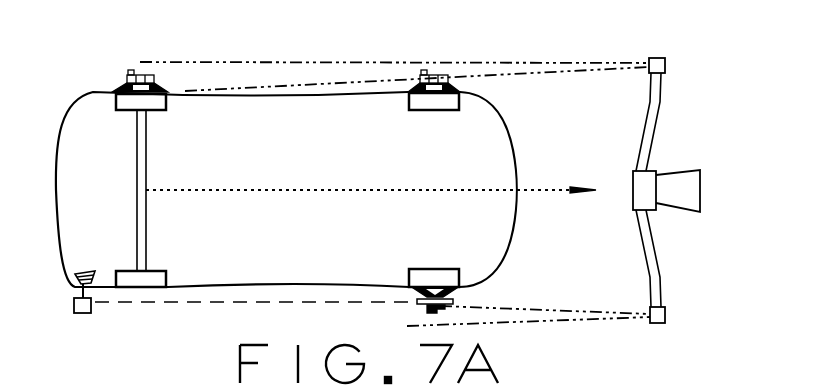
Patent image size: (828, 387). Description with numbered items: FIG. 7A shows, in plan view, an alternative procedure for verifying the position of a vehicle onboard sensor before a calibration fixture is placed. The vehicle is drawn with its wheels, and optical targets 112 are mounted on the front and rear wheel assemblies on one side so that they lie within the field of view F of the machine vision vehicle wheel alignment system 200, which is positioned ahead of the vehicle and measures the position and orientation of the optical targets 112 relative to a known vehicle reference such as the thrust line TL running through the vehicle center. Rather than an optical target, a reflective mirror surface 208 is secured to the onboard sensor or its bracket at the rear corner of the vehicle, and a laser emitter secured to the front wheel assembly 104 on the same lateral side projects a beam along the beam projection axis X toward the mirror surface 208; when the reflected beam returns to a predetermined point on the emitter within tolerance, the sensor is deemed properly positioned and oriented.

The optical target 112 is at (140, 75).
The front wheel assembly 104 is at (442, 276).
The reflective mirror surface 208 is at (84, 313).
The machine vision vehicle wheel alignment system 200 is at (700, 193).
The field of view F is at (533, 60).
The thrust line TL is at (233, 190).
The beam projection axis X is at (198, 302).